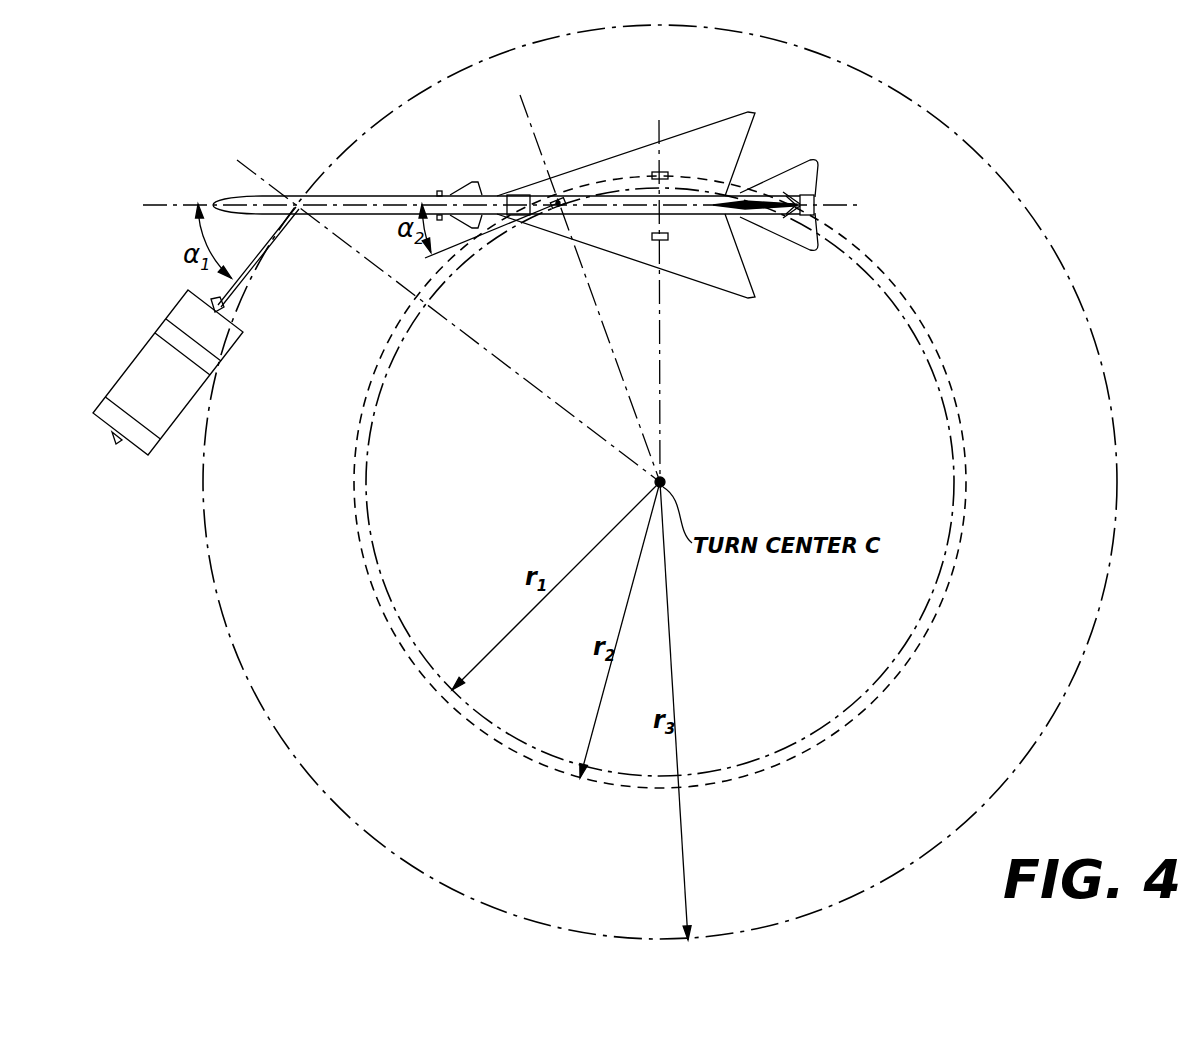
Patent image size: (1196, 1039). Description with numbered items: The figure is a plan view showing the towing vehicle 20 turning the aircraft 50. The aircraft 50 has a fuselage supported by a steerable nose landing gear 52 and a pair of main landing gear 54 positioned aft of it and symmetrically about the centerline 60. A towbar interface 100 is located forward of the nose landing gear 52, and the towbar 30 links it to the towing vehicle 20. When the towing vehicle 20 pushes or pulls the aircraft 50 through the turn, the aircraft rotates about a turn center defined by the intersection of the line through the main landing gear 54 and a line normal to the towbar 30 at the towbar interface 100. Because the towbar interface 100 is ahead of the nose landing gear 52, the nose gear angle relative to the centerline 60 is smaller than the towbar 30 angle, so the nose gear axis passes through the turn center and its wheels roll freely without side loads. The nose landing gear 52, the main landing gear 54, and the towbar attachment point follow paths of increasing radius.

The towing vehicle 20 is at (137, 358).
The towbar 30 is at (249, 268).
The aircraft 50 is at (597, 138).
The nose landing gear 52 is at (556, 213).
The main landing gear 54 is at (662, 172).
The centerline 60 is at (177, 204).
The towbar interface 100 is at (296, 190).